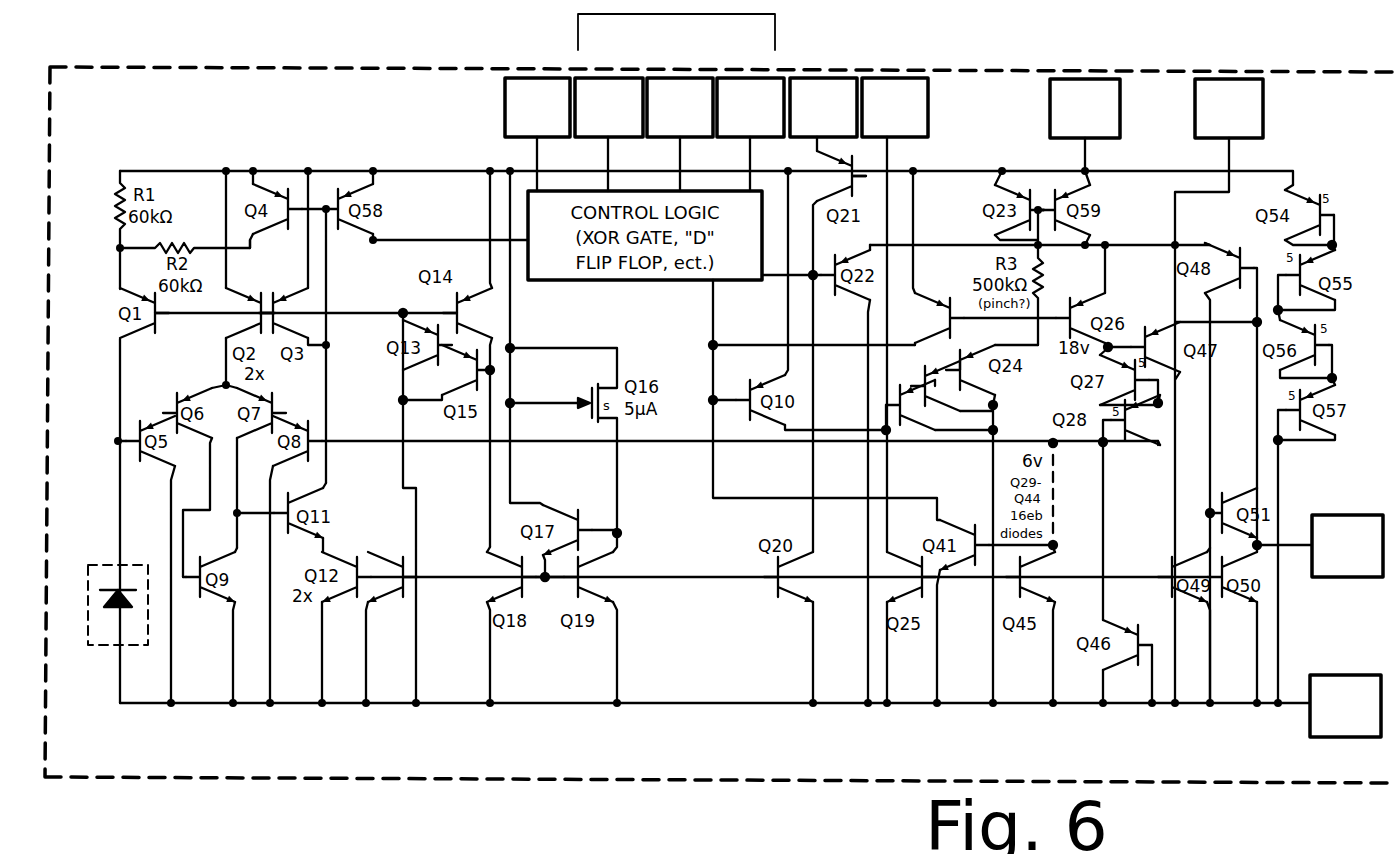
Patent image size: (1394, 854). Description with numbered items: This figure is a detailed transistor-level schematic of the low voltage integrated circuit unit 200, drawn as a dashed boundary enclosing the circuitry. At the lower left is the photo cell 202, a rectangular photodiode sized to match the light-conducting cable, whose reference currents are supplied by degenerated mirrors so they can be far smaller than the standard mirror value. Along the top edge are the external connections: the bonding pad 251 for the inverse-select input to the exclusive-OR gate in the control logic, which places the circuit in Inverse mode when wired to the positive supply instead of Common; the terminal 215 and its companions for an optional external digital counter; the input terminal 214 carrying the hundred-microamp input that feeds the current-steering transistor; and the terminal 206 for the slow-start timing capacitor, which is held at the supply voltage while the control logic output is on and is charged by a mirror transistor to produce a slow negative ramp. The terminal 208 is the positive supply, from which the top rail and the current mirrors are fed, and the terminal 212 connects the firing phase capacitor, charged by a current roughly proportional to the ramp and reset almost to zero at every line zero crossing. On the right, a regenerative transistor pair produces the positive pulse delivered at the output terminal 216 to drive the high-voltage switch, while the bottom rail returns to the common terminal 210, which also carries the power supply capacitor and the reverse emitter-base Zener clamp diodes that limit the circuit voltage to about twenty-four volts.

The low voltage (LV) integrated circuit unit 200 is at (290, 66).
The bonding pad 251 is at (522, 77).
The terminal for optional external digital counter 215 is at (581, 77).
The input terminal 214 is at (842, 77).
The terminal 206 is at (918, 77).
The terminal 208 is at (1070, 78).
The terminal 212 is at (1226, 78).
The photo cell 202 is at (104, 566).
The output terminal 216 is at (1362, 580).
The terminal 210 is at (1318, 676).